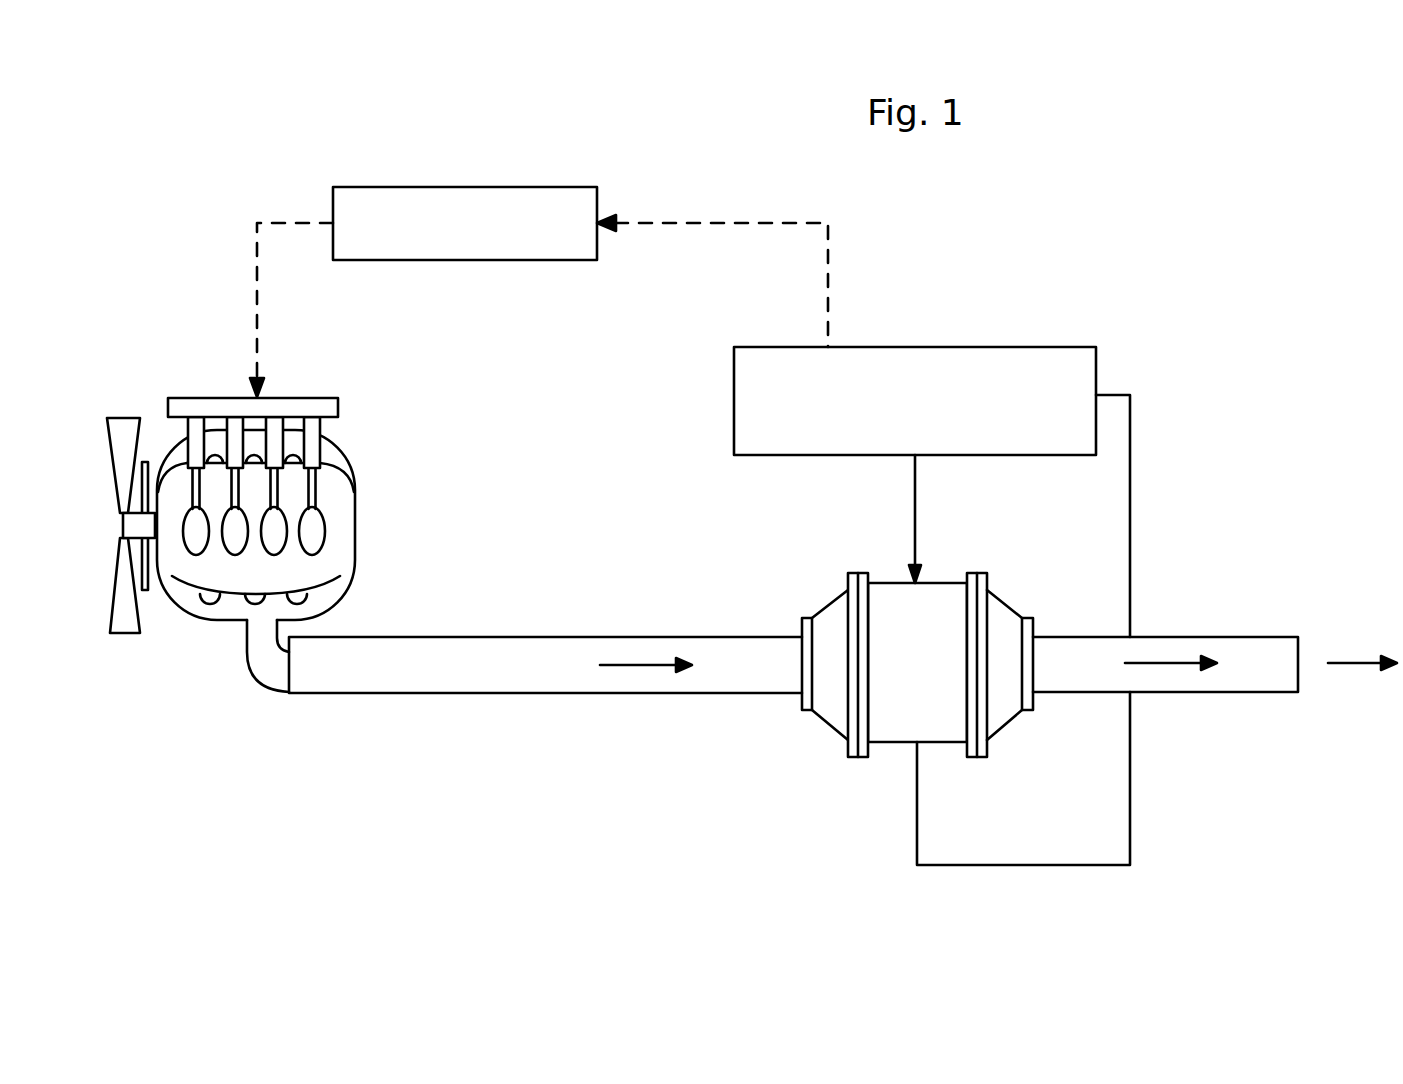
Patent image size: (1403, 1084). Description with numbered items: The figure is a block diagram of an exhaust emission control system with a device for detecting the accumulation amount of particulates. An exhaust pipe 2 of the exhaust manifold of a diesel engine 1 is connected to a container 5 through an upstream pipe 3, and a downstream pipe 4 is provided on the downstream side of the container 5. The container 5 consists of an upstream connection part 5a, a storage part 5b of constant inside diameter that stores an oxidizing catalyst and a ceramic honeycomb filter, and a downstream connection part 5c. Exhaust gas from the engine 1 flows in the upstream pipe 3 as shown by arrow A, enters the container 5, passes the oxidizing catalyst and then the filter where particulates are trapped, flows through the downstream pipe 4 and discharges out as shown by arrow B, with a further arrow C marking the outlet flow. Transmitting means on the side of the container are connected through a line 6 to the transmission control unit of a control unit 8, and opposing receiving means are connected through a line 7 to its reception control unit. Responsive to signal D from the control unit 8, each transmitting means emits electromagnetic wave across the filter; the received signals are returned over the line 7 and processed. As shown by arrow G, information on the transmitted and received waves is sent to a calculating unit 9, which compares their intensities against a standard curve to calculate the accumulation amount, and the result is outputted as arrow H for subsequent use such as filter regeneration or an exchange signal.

The diesel engine 1 is at (345, 509).
The exhaust pipe 2 is at (263, 657).
The upstream pipe 3 is at (451, 647).
The downstream pipe 4 is at (1257, 685).
The container 5 is at (916, 638).
The upstream connection part 5a is at (825, 598).
The storage part 5b is at (880, 590).
The downstream connection part 5c is at (1003, 598).
The line 6 is at (916, 490).
The line 7 is at (1131, 485).
The control unit 8 is at (927, 411).
The calculating unit 9 is at (470, 234).
The arrow A is at (640, 665).
The arrow B is at (1175, 665).
The exhaust gas discharged C is at (1352, 663).
The signal D is at (914, 479).
The arrow G is at (720, 222).
The arrow H is at (300, 222).